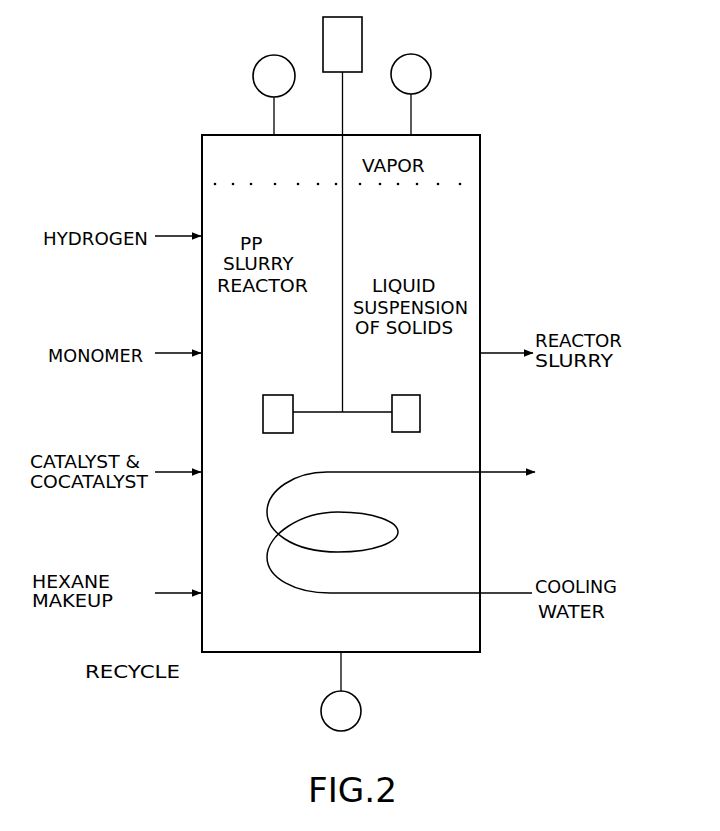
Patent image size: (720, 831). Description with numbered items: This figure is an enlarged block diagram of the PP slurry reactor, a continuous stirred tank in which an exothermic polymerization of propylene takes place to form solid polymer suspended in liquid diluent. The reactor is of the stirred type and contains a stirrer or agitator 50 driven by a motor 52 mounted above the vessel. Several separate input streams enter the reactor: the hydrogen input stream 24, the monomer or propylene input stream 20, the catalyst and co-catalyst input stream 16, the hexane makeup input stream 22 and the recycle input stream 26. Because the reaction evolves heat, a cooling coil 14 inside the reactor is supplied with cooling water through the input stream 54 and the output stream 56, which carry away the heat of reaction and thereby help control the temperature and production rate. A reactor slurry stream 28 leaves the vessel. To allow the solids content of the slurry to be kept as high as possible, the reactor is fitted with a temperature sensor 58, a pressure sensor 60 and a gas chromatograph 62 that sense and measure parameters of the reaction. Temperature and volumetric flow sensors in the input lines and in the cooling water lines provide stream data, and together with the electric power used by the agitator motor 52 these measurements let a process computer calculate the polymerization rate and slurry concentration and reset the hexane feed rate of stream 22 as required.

The cooling coil 14 is at (308, 589).
The catalyst and co-catalyst input stream 16 is at (172, 470).
The monomer or propylene input stream 20 is at (173, 347).
The hexane makeup input stream 22 is at (172, 590).
The hydrogen input stream 24 is at (170, 233).
The recycle input stream 26 is at (202, 638).
The reactor slurry outlet line 28 is at (505, 350).
The stirrer or agitator 50 is at (420, 419).
The motor 52 is at (362, 34).
The cooling water input stream 54 is at (508, 590).
The cooling water output stream 56 is at (515, 475).
The temperature sensor 58 is at (357, 717).
The pressure sensor 60 is at (276, 56).
The gas chromatograph 62 is at (428, 61).